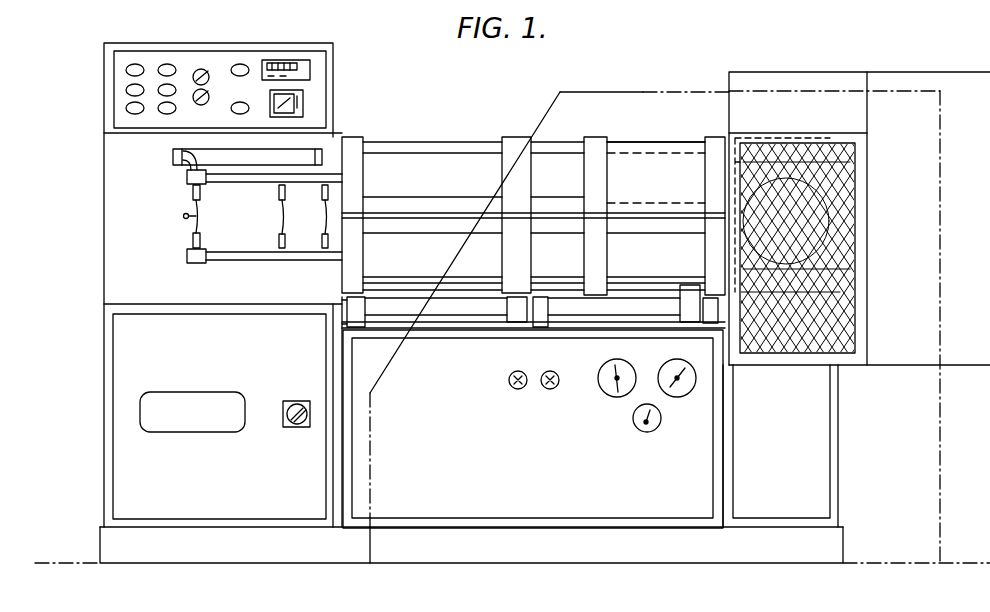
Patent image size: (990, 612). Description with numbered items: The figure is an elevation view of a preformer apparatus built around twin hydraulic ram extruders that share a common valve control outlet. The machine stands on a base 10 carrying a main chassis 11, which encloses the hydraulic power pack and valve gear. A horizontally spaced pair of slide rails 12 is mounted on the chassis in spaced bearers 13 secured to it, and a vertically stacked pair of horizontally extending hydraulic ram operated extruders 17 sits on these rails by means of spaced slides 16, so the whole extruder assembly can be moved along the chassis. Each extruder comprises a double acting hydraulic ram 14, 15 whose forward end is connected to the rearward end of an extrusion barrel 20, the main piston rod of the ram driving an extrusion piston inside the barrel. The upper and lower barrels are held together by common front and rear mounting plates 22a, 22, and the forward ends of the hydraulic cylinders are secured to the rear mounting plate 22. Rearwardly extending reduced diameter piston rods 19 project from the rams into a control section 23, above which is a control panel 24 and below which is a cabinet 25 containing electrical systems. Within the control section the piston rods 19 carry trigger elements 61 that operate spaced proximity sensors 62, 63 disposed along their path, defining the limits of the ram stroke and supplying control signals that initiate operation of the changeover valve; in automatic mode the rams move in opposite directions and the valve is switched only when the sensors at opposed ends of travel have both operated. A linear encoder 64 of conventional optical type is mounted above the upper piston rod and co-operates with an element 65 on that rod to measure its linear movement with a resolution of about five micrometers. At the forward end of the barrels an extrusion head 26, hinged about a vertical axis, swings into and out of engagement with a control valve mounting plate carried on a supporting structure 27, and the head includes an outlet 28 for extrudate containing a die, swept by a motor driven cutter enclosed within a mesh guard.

The base 10 is at (100, 541).
The main chassis 11 is at (718, 448).
The slide rails 12 is at (387, 315).
The bearers 13 is at (343, 322).
The double acting hydraulic ram 14 is at (440, 152).
The double acting hydraulic ram 15 is at (381, 258).
The slides 16 is at (517, 322).
The hydraulic ram operated extruders 17 is at (480, 146).
The rearwardly extending piston rods 19 is at (230, 177).
The extrusion barrel 20 is at (650, 140).
The rear mounting plate 22 is at (712, 140).
The front mounting plate 22a is at (595, 137).
The control section 23 is at (124, 218).
The control panel 24 is at (112, 79).
The cabinet 25 is at (120, 386).
The extrusion head 26 is at (788, 119).
The supporting structure 27 is at (818, 390).
The outlet 28 is at (853, 238).
The trigger elements 61 is at (187, 176).
The proximity sensors 62 is at (193, 190).
The proximity sensors 63 is at (300, 272).
The linear encoder 64 is at (283, 155).
The element 65 is at (173, 155).